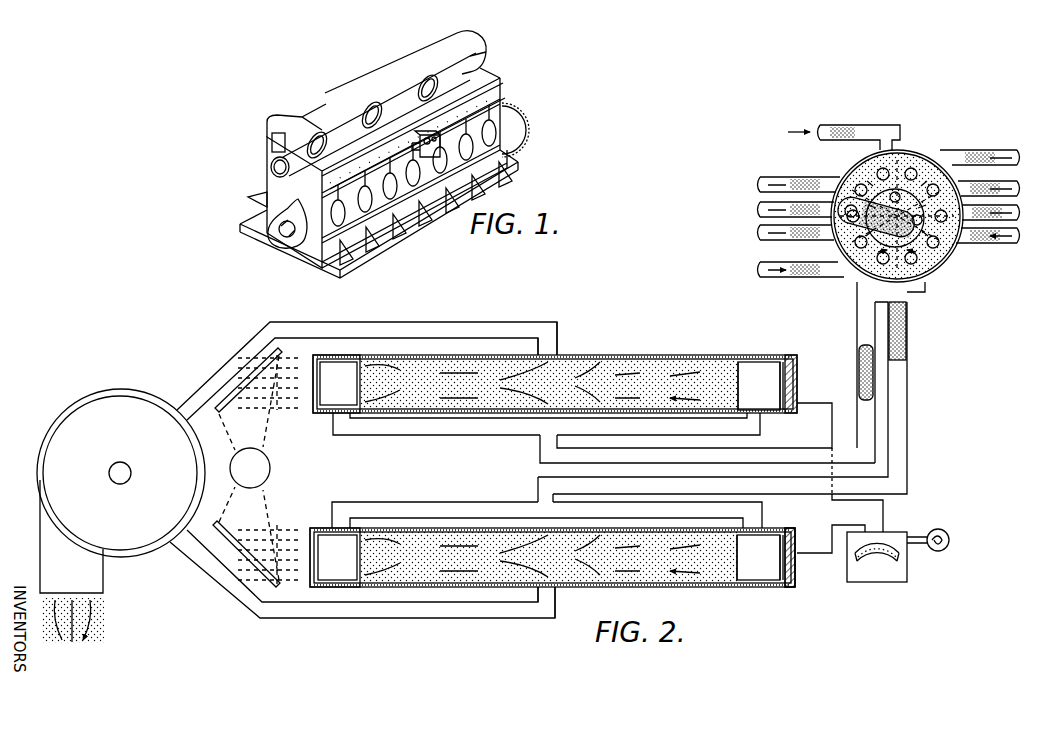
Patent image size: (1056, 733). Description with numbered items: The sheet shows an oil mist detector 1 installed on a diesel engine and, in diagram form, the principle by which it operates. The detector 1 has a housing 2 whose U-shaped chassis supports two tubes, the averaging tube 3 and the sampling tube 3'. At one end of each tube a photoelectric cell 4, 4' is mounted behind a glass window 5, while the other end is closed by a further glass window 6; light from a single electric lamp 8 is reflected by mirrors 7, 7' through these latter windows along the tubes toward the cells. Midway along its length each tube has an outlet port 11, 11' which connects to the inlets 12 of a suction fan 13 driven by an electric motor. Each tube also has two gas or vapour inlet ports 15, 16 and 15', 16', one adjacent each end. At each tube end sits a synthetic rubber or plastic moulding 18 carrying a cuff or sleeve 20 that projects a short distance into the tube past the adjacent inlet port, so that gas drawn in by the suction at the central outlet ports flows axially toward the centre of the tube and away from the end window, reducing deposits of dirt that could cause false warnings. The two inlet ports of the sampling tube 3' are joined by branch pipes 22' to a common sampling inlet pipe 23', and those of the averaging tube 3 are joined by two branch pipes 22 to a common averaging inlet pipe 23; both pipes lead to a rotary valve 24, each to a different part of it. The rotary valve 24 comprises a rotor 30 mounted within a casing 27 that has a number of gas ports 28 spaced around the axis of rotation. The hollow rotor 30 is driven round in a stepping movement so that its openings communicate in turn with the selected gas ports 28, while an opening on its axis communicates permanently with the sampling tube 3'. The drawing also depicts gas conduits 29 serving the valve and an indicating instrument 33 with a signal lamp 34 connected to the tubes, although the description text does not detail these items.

In FIG. 1, the detector 1 is at (440, 146).
In FIG. 1, the housing 2 is at (430, 158).
In FIG. 2, the averaging tube 3 is at (555, 371).
In FIG. 2, the sampling tube 3' is at (552, 573).
In FIG. 2, the photoelectric cell 4 is at (801, 383).
In FIG. 2, the photoelectric cell 4' is at (803, 561).
In FIG. 2, the glass window 5 is at (777, 387).
In FIG. 2, the glass window 6 is at (222, 374).
In FIG. 2, the mirror 7 is at (229, 399).
In FIG. 2, the mirror 7' is at (242, 552).
In FIG. 2, the electric lamp 8 is at (258, 468).
In FIG. 2, the outlet port 11 is at (561, 338).
In FIG. 2, the outlet port 11' is at (565, 602).
In FIG. 2, the inlets 12 is at (178, 408).
In FIG. 2, the suction fan 13 is at (122, 442).
In FIG. 2, the gas or vapour inlet port 15 is at (537, 436).
In FIG. 2, the gas or vapour inlet port 15' is at (537, 503).
In FIG. 2, the gas or vapour inlet port 16 is at (675, 428).
In FIG. 2, the gas or vapour inlet port 16' is at (673, 515).
In FIG. 2, the moulding 18 is at (312, 360).
In FIG. 2, the cuff or sleeve 20 is at (335, 370).
In FIG. 2, the branch pipes 22 is at (686, 433).
In FIG. 2, the branch pipes 22' is at (525, 488).
In FIG. 2, the averaging inlet pipe 23 is at (851, 372).
In FIG. 2, the sampling inlet pipe 23' is at (742, 388).
In FIG. 2, the rotary valve 24 is at (956, 260).
In FIG. 2, the casing 27 is at (898, 178).
In FIG. 2, the gas ports 28 is at (938, 170).
In FIG. 1, the conduit 29 is at (400, 172).
In FIG. 2, the conduit 29 is at (850, 127).
In FIG. 2, the rotor 30 is at (878, 188).
In FIG. 2, the indicating instrument 33 is at (885, 575).
In FIG. 2, the signal lamp 34 is at (943, 533).